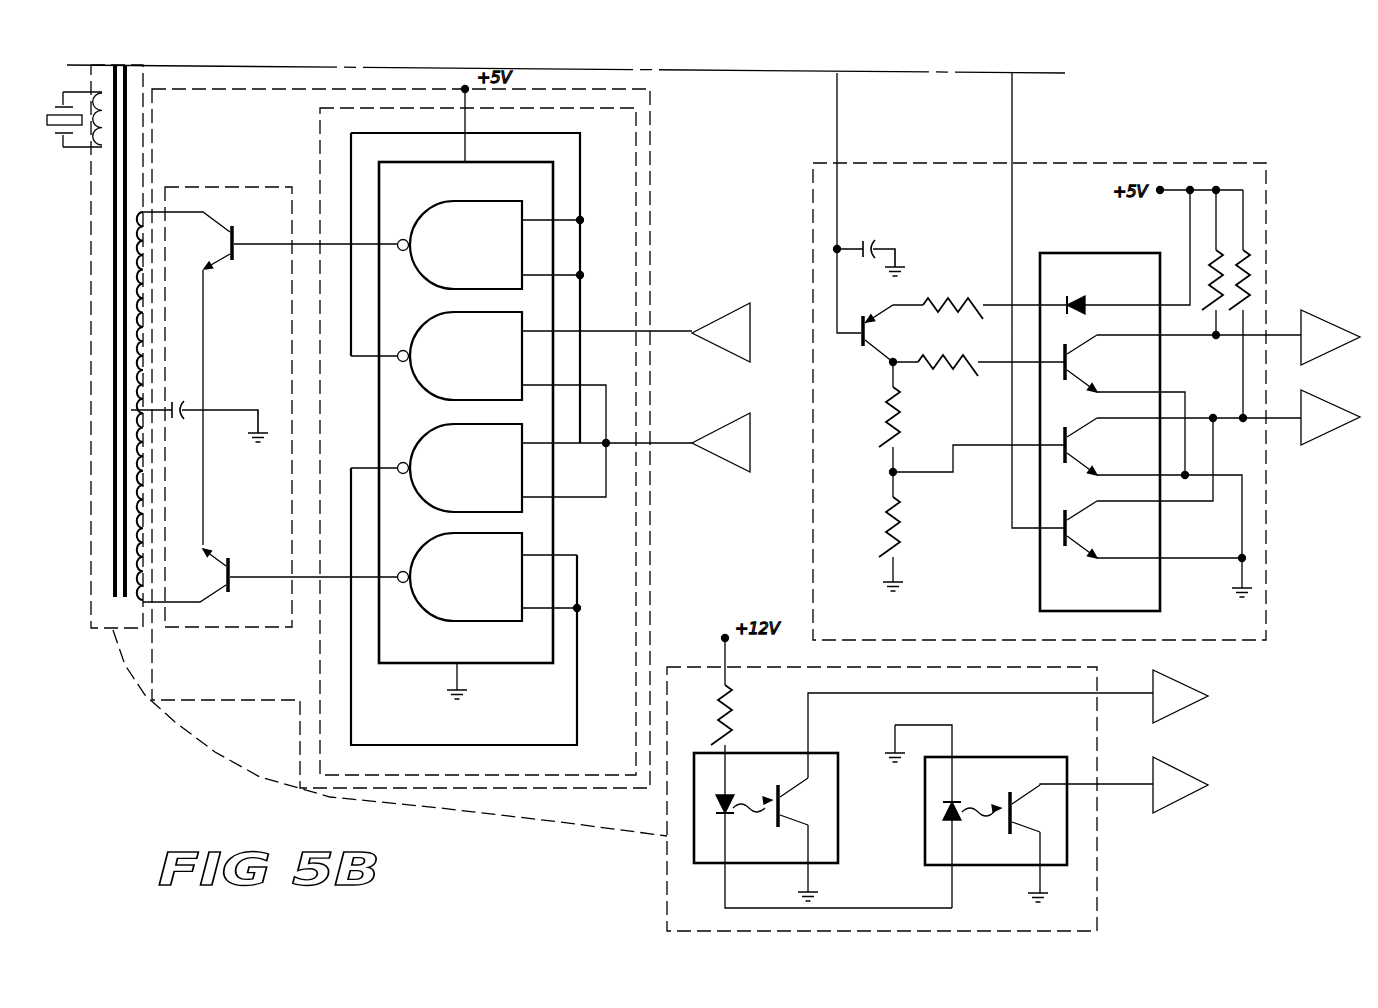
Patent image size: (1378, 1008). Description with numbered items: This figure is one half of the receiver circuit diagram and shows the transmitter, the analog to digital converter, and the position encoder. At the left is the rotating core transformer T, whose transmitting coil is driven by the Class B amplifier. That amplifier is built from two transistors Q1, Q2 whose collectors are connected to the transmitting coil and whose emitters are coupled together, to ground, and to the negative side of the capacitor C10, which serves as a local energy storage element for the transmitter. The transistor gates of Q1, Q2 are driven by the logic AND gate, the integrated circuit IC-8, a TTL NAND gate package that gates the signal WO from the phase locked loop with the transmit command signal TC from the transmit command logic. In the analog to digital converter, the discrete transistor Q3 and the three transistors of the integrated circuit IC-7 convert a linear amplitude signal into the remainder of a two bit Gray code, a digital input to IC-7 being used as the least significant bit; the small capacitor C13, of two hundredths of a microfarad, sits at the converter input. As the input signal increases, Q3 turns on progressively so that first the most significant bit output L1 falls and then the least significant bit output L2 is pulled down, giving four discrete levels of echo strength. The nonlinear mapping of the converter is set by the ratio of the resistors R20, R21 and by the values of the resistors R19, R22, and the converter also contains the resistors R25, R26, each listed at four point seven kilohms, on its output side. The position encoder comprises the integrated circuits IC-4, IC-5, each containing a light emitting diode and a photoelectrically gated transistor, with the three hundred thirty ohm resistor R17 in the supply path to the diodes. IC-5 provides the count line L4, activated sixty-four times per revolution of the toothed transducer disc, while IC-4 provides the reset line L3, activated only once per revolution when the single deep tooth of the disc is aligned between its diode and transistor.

The transistor Q1 is at (270, 378).
The transistor Q2 is at (270, 582).
The discrete transistor Q3 is at (861, 350).
The capacitor C10 is at (199, 417).
The capacitor C13 is at (878, 244).
The resistor R17 is at (732, 701).
The resistor R19 is at (940, 302).
The resistor R20 is at (900, 422).
The resistor R21 is at (900, 524).
The resistor R22 is at (942, 360).
The resistor R25 is at (1210, 256).
The resistor R26 is at (1248, 266).
The integrated circuit IC-4 is at (923, 800).
The integrated circuit IC-5 is at (1039, 832).
The integrated circuit IC-7 is at (1160, 400).
The integrated circuit IC-8 is at (521, 439).
The output line (MSB) L1 is at (1330, 347).
The output line (LSB) L2 is at (1330, 427).
The reset line L3 is at (1180, 696).
The count line L4 is at (1180, 785).
The phase locked loop signal WO is at (721, 332).
The transmit command signal TC is at (721, 442).
The rotating core transformer T is at (53, 143).